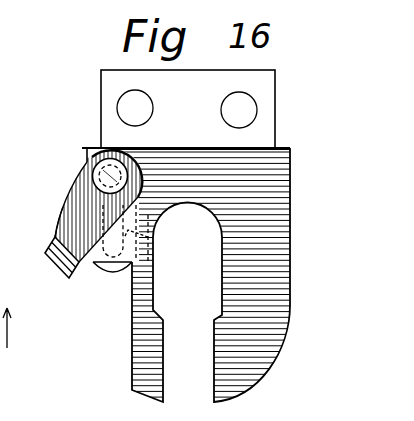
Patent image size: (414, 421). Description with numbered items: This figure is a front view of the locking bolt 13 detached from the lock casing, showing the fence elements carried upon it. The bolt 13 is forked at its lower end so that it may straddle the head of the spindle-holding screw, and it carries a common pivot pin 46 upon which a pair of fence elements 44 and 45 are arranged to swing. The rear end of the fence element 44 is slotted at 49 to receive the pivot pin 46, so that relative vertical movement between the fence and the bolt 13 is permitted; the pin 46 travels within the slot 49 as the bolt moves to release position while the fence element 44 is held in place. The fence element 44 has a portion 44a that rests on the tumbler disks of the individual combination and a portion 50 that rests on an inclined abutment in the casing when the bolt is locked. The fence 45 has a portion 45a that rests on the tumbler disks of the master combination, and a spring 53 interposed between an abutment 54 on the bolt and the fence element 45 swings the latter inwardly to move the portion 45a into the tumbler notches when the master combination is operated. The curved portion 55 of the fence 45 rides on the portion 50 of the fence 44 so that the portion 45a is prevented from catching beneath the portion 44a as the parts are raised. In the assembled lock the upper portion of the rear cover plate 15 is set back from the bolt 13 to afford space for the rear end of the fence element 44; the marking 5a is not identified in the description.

The locking bolt 13 is at (197, 275).
The fence element 44 is at (99, 210).
The portion of fence element 44 44a is at (69, 278).
The fence element 45 is at (70, 203).
The portion of fence 45 45a is at (66, 214).
The pivot pin 46 is at (95, 168).
The slot 49 is at (138, 212).
The portion of fence 44 50 is at (41, 257).
The spring 53 is at (86, 148).
The abutment 54 is at (171, 153).
The curved portion 55 is at (74, 188).
The section line 5a is at (0, 296).
The rear cover plate 15 is at (10, 351).